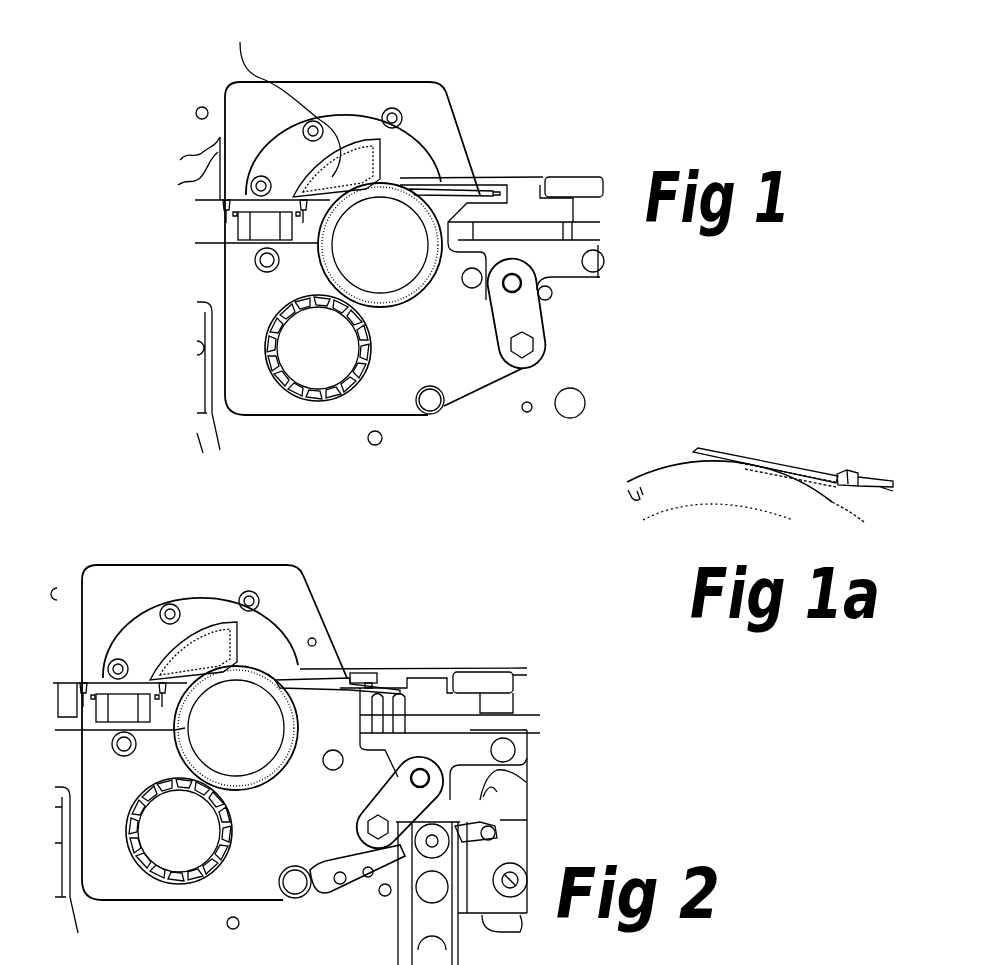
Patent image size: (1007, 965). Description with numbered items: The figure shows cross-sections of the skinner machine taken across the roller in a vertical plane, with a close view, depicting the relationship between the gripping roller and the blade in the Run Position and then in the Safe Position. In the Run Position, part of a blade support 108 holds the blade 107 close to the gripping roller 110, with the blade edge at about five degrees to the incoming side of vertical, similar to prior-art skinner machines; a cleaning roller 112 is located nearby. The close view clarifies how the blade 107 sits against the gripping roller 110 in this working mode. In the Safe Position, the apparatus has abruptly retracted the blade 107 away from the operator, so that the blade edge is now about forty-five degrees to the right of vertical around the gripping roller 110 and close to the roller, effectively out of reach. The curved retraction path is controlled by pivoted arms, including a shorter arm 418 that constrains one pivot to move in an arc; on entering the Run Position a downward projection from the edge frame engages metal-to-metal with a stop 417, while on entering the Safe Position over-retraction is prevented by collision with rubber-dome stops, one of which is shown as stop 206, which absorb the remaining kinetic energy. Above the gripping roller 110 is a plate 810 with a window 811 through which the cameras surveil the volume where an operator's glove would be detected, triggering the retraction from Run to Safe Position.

In FIG. 1A, the blade 107 is at (712, 453).
In FIG. 1, the blade support 108 is at (467, 158).
In FIG. 1A, the blade support 108 is at (892, 478).
In FIG. 2, the blade support 108 is at (350, 672).
In FIG. 1, the gripping roller 110 is at (412, 258).
In FIG. 1A, the gripping roller 110 is at (653, 518).
In FIG. 1, the cleaning roller 112 is at (344, 362).
In FIG. 2, the stop 206 is at (510, 793).
In FIG. 1, the stop 417 is at (472, 296).
In FIG. 1, the shorter arm 418 is at (518, 303).
In FIG. 2, the shorter arm 418 is at (385, 775).
In FIG. 1, the plate 810 is at (174, 179).
In FIG. 1, the window 811 is at (270, 96).